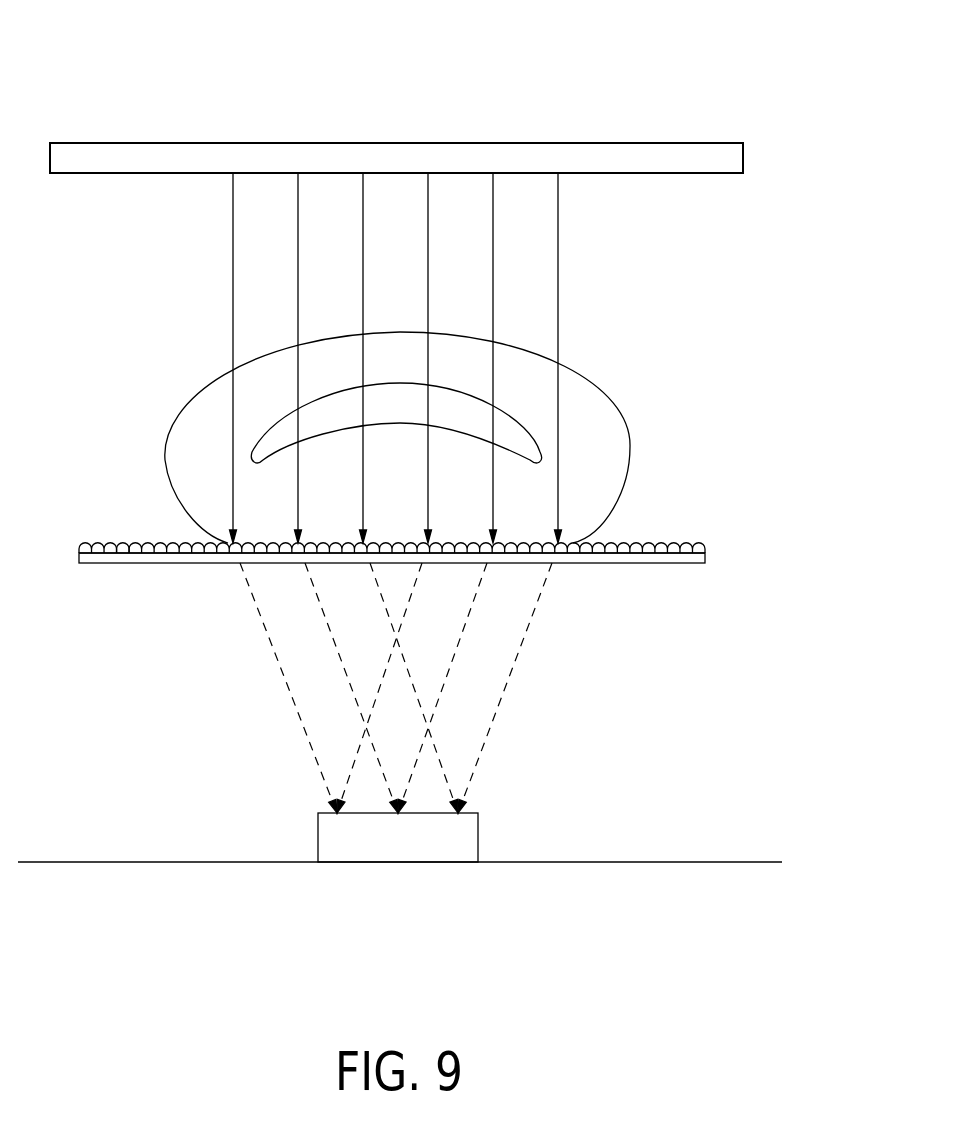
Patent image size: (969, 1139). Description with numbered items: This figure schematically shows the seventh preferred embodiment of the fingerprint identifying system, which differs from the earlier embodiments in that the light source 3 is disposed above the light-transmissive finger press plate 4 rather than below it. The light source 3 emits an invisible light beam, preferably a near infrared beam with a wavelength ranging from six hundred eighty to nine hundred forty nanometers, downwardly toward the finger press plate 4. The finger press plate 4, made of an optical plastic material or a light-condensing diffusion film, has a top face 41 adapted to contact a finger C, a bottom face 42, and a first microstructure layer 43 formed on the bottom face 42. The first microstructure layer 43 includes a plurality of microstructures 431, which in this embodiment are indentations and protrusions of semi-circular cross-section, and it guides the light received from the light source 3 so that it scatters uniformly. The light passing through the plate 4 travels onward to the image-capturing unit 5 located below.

The light source 3 is at (421, 136).
The finger C is at (608, 408).
The light-transmissive finger press plate 4 is at (442, 508).
The top face 41 is at (691, 548).
The bottom face 42 is at (697, 563).
The first microstructure layer 43 is at (666, 533).
The microstructure 431 is at (115, 543).
The image-capturing unit 5 is at (391, 869).